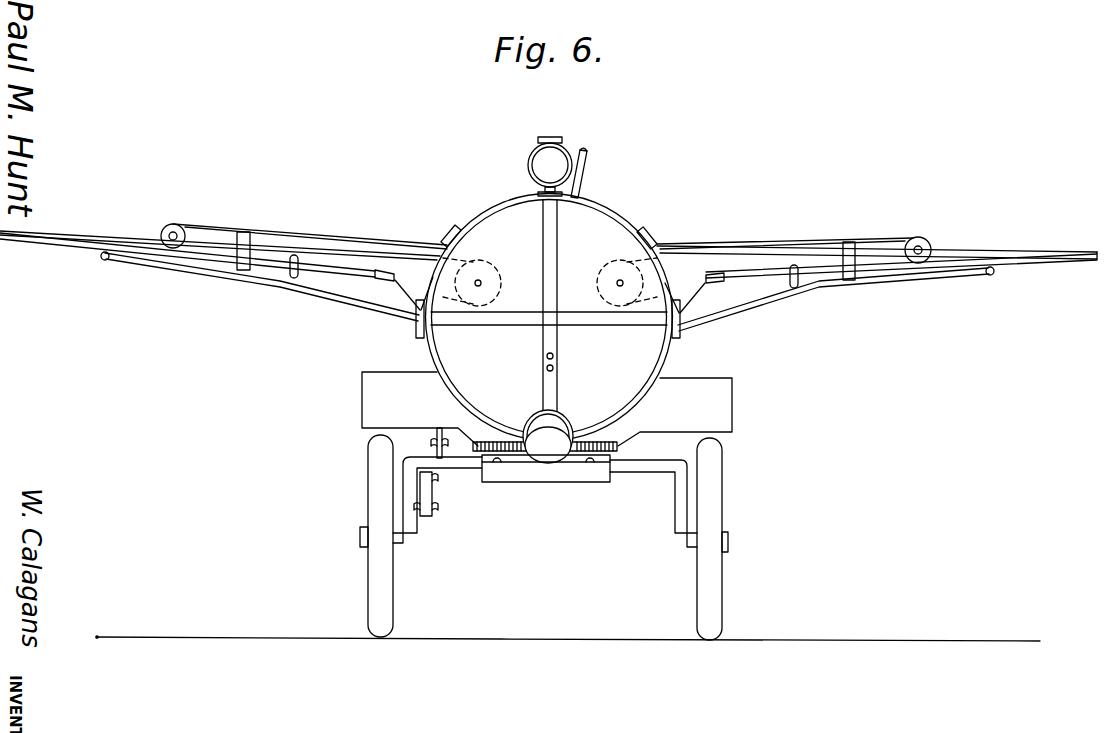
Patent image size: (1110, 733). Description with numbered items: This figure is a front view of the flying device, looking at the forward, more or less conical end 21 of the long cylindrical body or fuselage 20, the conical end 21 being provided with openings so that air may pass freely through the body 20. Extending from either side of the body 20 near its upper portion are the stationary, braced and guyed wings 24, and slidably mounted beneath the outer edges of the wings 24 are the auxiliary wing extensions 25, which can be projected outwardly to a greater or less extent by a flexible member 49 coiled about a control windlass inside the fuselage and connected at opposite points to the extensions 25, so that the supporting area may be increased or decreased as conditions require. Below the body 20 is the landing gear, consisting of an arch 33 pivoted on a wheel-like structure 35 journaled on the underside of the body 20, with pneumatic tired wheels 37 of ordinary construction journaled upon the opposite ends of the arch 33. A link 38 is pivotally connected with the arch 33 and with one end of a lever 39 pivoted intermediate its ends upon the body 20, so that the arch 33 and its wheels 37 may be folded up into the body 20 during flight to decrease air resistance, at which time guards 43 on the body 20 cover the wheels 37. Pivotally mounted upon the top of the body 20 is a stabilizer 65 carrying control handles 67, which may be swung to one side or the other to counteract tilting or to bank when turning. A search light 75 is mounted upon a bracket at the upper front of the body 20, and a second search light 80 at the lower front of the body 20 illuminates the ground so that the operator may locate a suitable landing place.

The body or fuselage 20 is at (625, 217).
The conical end 21 is at (450, 348).
The wings 24 is at (204, 235).
The auxiliary wing extensions 25 is at (68, 247).
The arch 33 is at (487, 463).
The wheel-like structure 35 is at (612, 465).
The pneumatic tired wheels 37 is at (375, 562).
The link 38 is at (423, 493).
The lever 39 is at (425, 448).
The guards 43 is at (372, 403).
The flexible member 49 is at (303, 278).
The stabilizer 65 is at (560, 138).
The control handles 67 is at (578, 178).
The search light 75 is at (537, 163).
The search light 80 is at (548, 455).